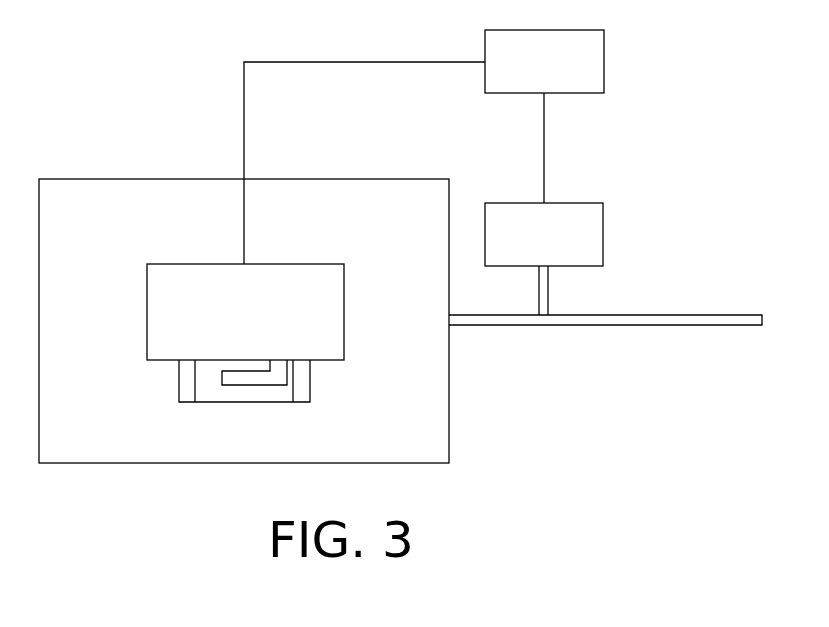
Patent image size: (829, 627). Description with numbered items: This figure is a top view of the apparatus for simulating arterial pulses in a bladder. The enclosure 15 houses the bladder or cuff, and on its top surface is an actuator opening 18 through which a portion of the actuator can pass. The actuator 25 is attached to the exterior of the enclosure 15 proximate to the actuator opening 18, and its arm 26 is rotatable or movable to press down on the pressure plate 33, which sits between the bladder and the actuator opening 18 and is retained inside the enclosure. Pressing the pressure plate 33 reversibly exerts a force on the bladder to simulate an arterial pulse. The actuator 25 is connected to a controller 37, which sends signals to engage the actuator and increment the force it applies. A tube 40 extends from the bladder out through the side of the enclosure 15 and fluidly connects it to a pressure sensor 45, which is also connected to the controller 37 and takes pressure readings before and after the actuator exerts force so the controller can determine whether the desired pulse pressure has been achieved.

The enclosure 15 is at (118, 179).
The actuator 25 is at (158, 292).
The pressure plate 33 is at (212, 390).
The arm 26 is at (268, 382).
The actuator opening 18 is at (302, 372).
The controller 37 is at (556, 73).
The pressure sensor 45 is at (556, 248).
The tube 40 is at (620, 325).